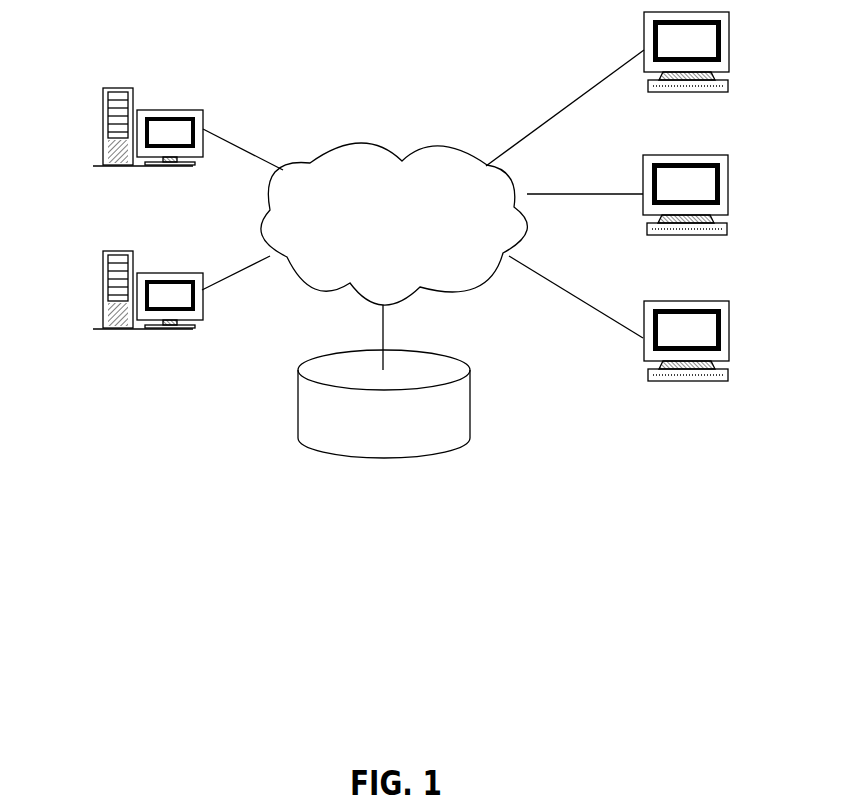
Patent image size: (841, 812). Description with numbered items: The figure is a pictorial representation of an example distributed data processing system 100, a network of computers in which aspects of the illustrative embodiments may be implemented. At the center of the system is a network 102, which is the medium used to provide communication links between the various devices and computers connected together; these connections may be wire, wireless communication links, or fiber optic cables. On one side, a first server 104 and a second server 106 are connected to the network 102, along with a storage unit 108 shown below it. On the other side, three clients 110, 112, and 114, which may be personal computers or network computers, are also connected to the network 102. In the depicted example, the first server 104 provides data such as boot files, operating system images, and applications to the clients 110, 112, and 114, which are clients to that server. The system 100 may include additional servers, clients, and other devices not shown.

The distributed data processing system 100 is at (488, 52).
The network 102 is at (368, 143).
The first server 104 is at (102, 130).
The second server 106 is at (102, 292).
The storage unit 108 is at (298, 400).
The client 110 is at (732, 52).
The client 112 is at (730, 195).
The client 114 is at (732, 338).